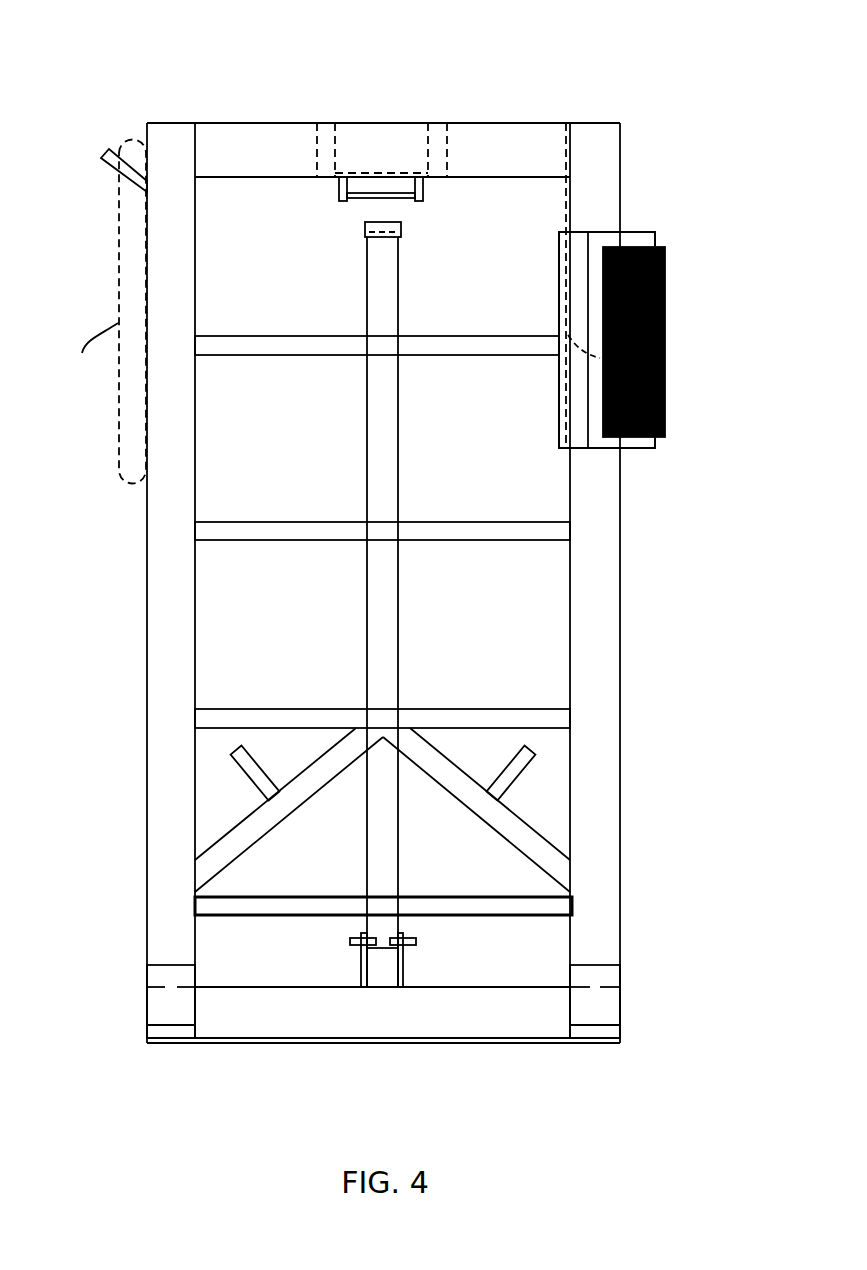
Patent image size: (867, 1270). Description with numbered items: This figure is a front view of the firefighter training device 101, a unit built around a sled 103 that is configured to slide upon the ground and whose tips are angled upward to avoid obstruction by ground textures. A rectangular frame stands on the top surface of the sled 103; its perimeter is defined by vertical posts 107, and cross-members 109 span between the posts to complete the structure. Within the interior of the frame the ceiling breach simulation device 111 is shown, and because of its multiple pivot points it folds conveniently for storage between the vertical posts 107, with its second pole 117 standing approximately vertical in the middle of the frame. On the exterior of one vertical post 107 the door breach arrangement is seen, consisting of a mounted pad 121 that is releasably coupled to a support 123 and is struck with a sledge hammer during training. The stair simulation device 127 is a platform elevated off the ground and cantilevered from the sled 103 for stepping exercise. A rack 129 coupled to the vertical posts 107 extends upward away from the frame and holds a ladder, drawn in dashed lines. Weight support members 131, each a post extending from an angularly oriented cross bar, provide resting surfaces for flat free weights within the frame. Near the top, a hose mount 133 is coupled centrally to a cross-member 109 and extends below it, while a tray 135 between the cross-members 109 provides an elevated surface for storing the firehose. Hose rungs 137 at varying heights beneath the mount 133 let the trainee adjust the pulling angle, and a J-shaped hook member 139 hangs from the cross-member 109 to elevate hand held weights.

The firefighter training device 101 is at (174, 48).
The sled 103 is at (358, 1029).
The vertical posts 107 is at (145, 698).
The cross-members 109 is at (525, 123).
The ceiling breach simulation device 111 is at (426, 965).
The second pole 117 is at (398, 297).
The mounted pad 121 is at (665, 318).
The support 123 is at (640, 448).
The stair simulation device 127 is at (300, 918).
The rack 129 is at (100, 160).
The weight support member 131 is at (300, 812).
The hose mount 133 is at (338, 195).
The tray 135 is at (335, 152).
The hose rungs 137 is at (335, 336).
The hook member 139 is at (567, 205).